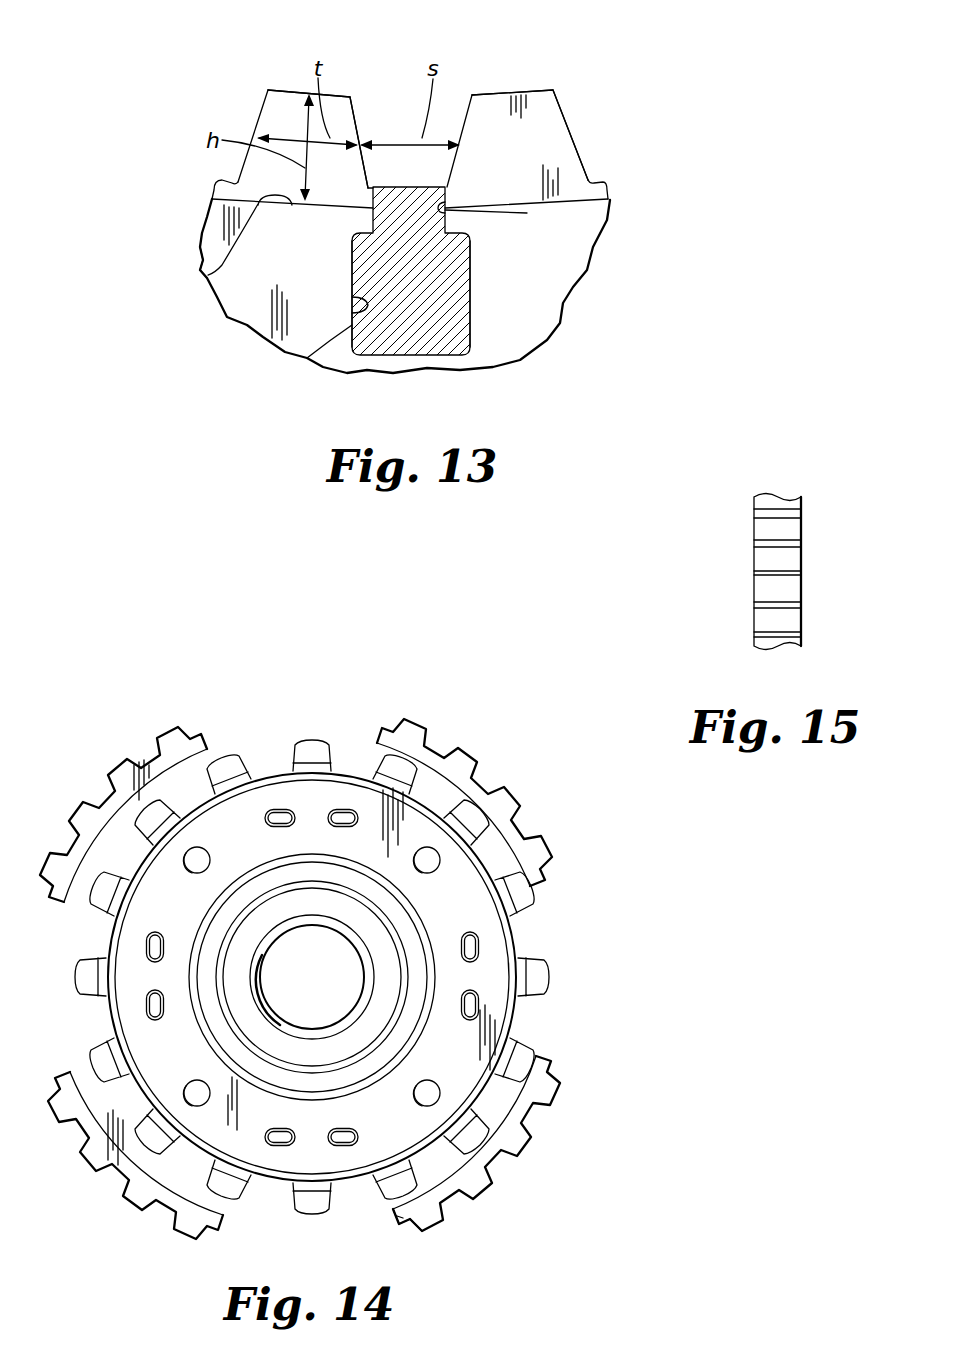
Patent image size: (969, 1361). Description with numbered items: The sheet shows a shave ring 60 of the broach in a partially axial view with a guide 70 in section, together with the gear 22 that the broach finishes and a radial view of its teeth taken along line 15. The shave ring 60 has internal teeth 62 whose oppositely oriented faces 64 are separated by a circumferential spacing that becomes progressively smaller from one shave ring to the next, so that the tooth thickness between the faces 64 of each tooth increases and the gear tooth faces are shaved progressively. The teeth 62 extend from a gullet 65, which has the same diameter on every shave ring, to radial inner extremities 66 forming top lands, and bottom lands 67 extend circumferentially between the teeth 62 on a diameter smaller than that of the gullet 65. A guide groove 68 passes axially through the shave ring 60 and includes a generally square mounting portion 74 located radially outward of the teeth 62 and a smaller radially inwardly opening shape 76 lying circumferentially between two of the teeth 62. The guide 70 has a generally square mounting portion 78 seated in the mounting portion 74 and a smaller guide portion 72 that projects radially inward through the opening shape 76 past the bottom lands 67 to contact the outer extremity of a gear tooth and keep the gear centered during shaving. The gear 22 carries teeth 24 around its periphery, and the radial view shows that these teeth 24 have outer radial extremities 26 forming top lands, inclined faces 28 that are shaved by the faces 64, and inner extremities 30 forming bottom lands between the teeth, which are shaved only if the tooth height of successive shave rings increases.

In FIG. 14, the section line 15 is at (463, 745).
In FIG. 14, the gear 22 is at (567, 1040).
In FIG. 15, the gear teeth 24 is at (802, 567).
In FIG. 14, the gear teeth 24 is at (557, 1099).
In FIG. 15, the outer radial extremities 26 is at (760, 559).
In FIG. 14, the outer radial extremities 26 is at (510, 1163).
In FIG. 15, the inclined faces 28 is at (760, 542).
In FIG. 14, the inclined faces 28 is at (520, 1140).
In FIG. 15, the inner extremities 30 is at (793, 527).
In FIG. 14, the inner extremities 30 is at (527, 1148).
In FIG. 13, the shave ring 60 is at (201, 237).
In FIG. 13, the internal teeth 62 is at (268, 90).
In FIG. 13, the faces 64 is at (253, 128).
In FIG. 13, the gullet 65 is at (207, 274).
In FIG. 13, the radial inner extremities 66 is at (290, 90).
In FIG. 13, the bottom lands 67 is at (227, 177).
In FIG. 13, the guide groove 68 is at (466, 294).
In FIG. 13, the guide 70 is at (471, 253).
In FIG. 13, the guide portion 72 is at (406, 187).
In FIG. 13, the mounting portion 74 is at (307, 359).
In FIG. 13, the radially inwardly opening shape 76 is at (527, 213).
In FIG. 13, the mounting portion 78 is at (362, 274).